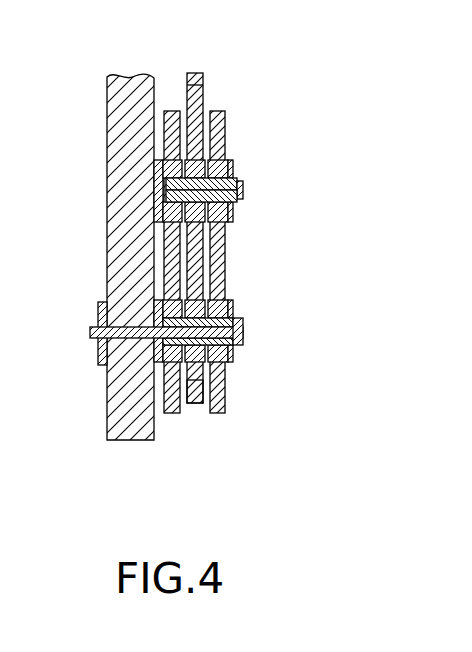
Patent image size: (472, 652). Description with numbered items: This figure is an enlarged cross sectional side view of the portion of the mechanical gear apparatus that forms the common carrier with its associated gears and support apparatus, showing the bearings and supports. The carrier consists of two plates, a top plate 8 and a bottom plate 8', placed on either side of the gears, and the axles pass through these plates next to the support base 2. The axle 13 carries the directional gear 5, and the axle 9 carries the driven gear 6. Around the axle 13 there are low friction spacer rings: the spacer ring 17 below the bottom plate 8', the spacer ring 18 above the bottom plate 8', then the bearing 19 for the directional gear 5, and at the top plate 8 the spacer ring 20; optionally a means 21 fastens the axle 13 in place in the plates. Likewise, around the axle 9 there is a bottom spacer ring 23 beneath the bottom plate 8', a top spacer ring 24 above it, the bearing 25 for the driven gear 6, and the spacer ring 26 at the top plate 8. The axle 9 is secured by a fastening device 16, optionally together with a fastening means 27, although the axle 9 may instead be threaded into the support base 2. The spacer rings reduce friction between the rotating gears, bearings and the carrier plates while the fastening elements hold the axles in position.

The support base 2 is at (132, 420).
The directional gear 5 is at (197, 229).
The driven gear 6 is at (197, 403).
The top plate 8 is at (233, 216).
The bottom plate 8' is at (170, 212).
The axle 9 is at (238, 333).
The axle 13 is at (243, 189).
The fastening device 16 is at (238, 323).
The spacer ring 17 is at (157, 210).
The spacer ring 18 is at (165, 163).
The bearing 19 is at (197, 183).
The spacer ring 20 is at (233, 162).
The means for fastening 21 is at (243, 197).
The bottom spacer ring 23 is at (162, 323).
The top spacer ring 24 is at (167, 352).
The bearing 25 is at (235, 353).
The spacer ring 26 is at (232, 305).
The fastening means 27 is at (100, 355).